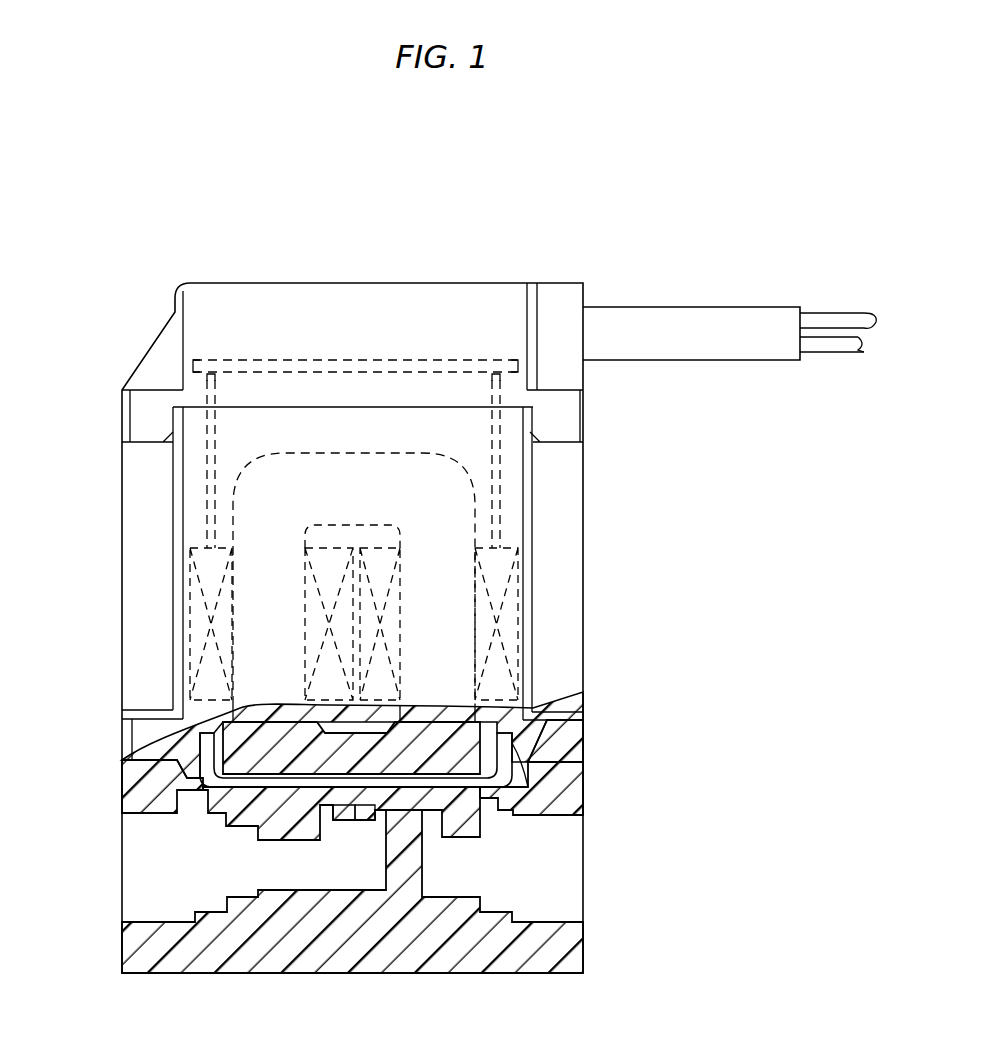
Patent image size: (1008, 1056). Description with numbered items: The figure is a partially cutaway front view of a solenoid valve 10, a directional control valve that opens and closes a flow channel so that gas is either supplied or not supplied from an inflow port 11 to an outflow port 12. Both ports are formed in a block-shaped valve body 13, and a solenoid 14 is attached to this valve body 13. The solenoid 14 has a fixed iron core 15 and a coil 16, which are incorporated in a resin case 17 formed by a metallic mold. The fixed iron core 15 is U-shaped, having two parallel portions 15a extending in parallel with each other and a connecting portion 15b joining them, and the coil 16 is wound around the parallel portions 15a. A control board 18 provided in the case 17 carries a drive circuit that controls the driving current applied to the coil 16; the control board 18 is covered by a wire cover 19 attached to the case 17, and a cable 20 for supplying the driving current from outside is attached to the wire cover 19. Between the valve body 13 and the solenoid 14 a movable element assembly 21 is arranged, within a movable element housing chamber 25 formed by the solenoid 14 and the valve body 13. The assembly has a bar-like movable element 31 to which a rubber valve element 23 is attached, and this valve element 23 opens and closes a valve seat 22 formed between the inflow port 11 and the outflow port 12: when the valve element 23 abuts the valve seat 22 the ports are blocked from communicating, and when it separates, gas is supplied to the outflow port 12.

The solenoid valve 10 is at (552, 229).
The inflow port 11 is at (525, 865).
The outflow port 12 is at (175, 864).
The valve body 13 is at (157, 948).
The solenoid 14 is at (586, 487).
The fixed iron core 15 is at (322, 490).
The parallel portions 15a is at (447, 657).
The connecting portion 15b is at (383, 490).
The coil 16 is at (478, 566).
The case 17 is at (148, 492).
The control board 18 is at (218, 372).
The wire cover 19 is at (263, 325).
The cable 20 is at (684, 328).
The movable element assembly 21 is at (277, 767).
The valve seat 22 is at (346, 805).
The valve element 23 is at (364, 805).
The movable element housing chamber 25 is at (247, 792).
The movable element 31 is at (454, 750).